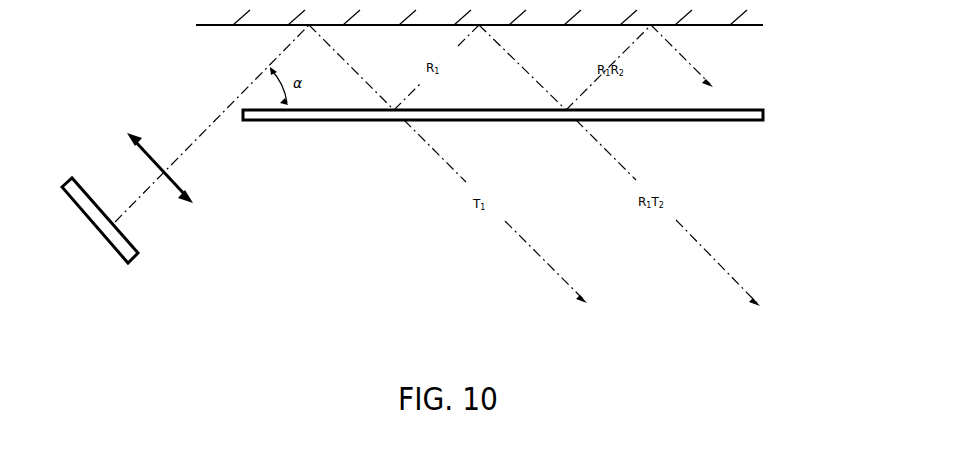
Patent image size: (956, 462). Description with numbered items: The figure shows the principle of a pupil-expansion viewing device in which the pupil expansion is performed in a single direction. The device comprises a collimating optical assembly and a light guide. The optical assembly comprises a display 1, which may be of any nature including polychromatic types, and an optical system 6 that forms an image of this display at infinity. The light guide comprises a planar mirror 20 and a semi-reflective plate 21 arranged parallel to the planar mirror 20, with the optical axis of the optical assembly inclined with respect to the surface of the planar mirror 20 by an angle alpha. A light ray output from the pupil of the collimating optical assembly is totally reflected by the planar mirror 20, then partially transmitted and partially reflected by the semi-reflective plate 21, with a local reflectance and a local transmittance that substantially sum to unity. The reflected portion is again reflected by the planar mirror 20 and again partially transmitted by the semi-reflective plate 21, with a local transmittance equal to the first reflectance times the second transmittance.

The display 1 is at (138, 253).
The optical system 6 is at (193, 203).
The planar mirror 20 is at (765, 24).
The semi-reflective plate 21 is at (764, 114).